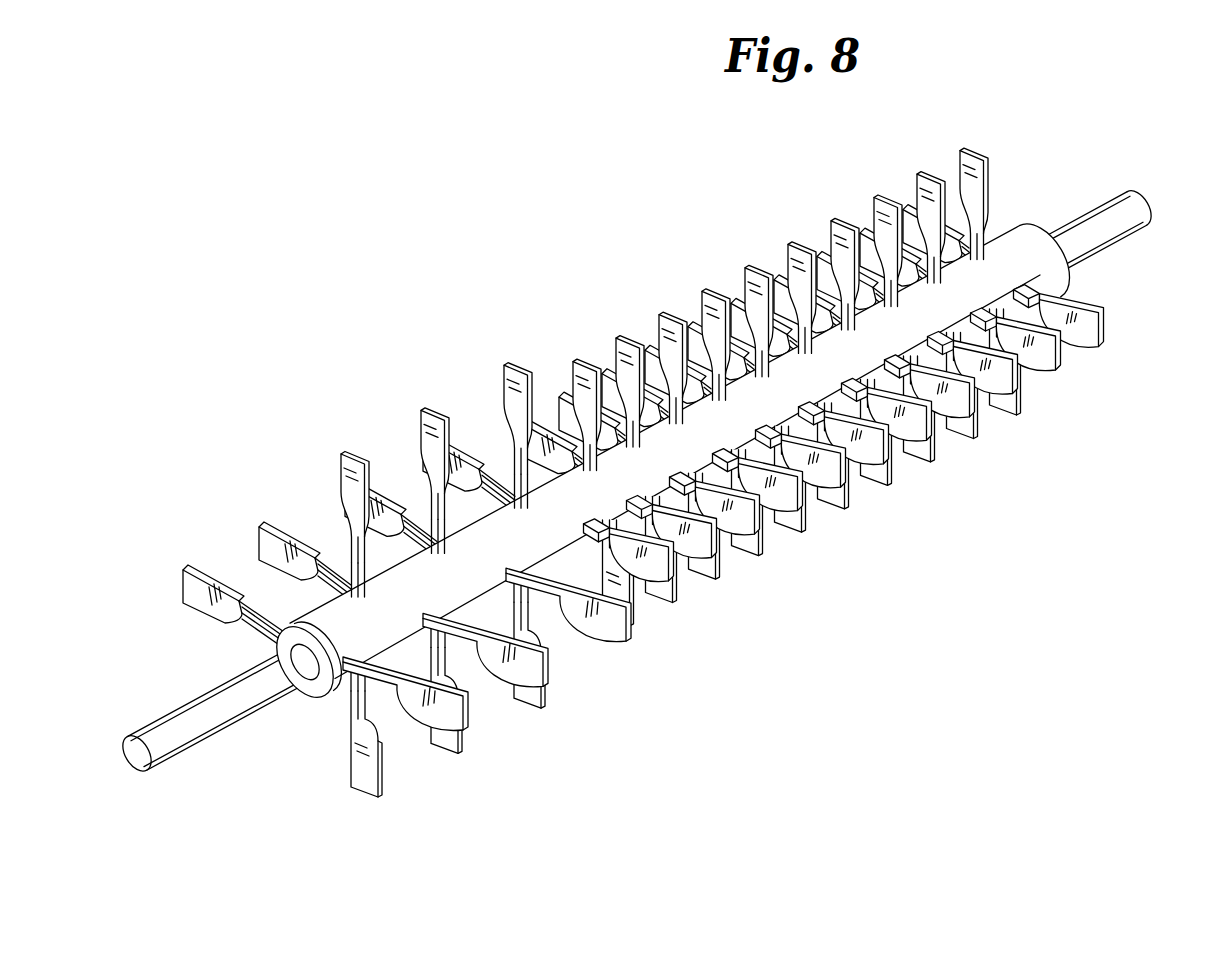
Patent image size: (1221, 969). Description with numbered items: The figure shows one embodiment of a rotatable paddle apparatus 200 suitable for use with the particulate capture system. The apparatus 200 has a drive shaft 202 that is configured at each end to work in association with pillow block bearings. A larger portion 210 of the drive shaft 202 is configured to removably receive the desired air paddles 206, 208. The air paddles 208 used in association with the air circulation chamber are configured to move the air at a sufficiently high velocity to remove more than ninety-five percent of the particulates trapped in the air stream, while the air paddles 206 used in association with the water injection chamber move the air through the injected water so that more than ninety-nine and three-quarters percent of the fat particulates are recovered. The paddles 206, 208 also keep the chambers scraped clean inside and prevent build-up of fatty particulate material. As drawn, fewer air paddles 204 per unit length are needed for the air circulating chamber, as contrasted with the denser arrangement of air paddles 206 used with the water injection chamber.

The rotatable paddle apparatus 200 is at (567, 303).
The drive shaft 202 is at (1104, 246).
The air paddles 204 is at (363, 778).
The air paddles 206 is at (762, 540).
The air paddles 208 is at (292, 604).
The larger portion 210 is at (316, 688).